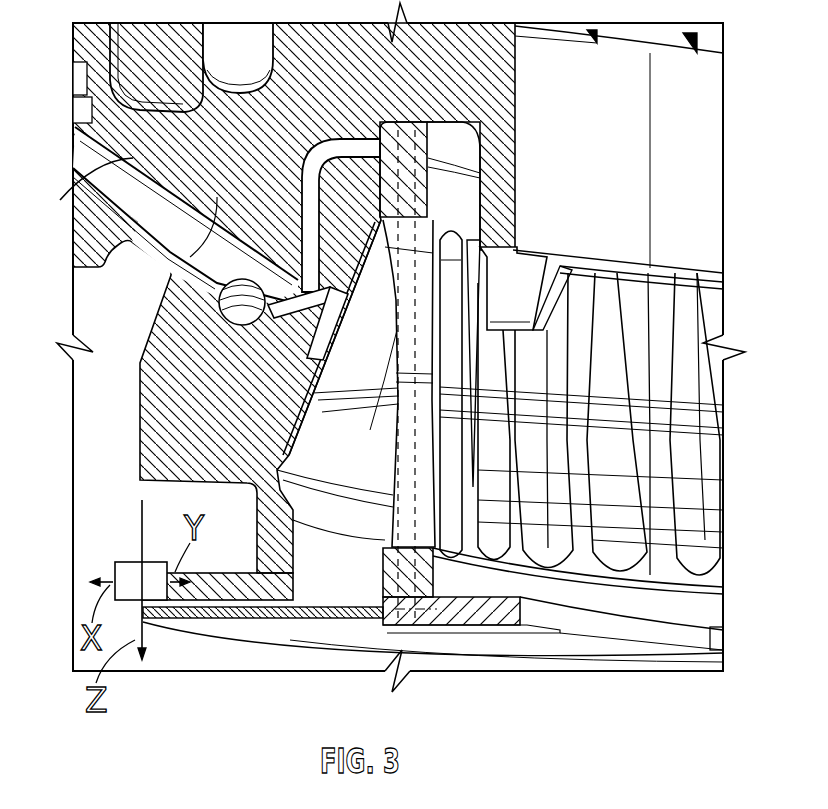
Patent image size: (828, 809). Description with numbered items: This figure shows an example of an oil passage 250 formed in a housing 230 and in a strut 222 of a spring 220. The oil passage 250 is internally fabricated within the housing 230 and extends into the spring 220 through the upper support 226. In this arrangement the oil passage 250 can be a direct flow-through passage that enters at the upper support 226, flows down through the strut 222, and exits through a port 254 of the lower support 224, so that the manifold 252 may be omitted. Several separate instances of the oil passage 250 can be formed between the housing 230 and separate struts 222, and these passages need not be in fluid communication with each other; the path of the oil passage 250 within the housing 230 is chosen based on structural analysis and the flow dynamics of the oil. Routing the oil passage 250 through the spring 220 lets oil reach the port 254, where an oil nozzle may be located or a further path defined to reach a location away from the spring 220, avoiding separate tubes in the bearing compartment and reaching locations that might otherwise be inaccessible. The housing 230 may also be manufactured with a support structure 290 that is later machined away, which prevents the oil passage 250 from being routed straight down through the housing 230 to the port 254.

The spring 220 is at (642, 603).
The strut 222 is at (390, 535).
The lower support 224 is at (395, 575).
The upper support 226 is at (405, 122).
The housing 230 is at (170, 393).
The oil passage 250 is at (410, 430).
The manifold 252 is at (345, 135).
The port 254 is at (417, 613).
The support structure 290 is at (170, 505).